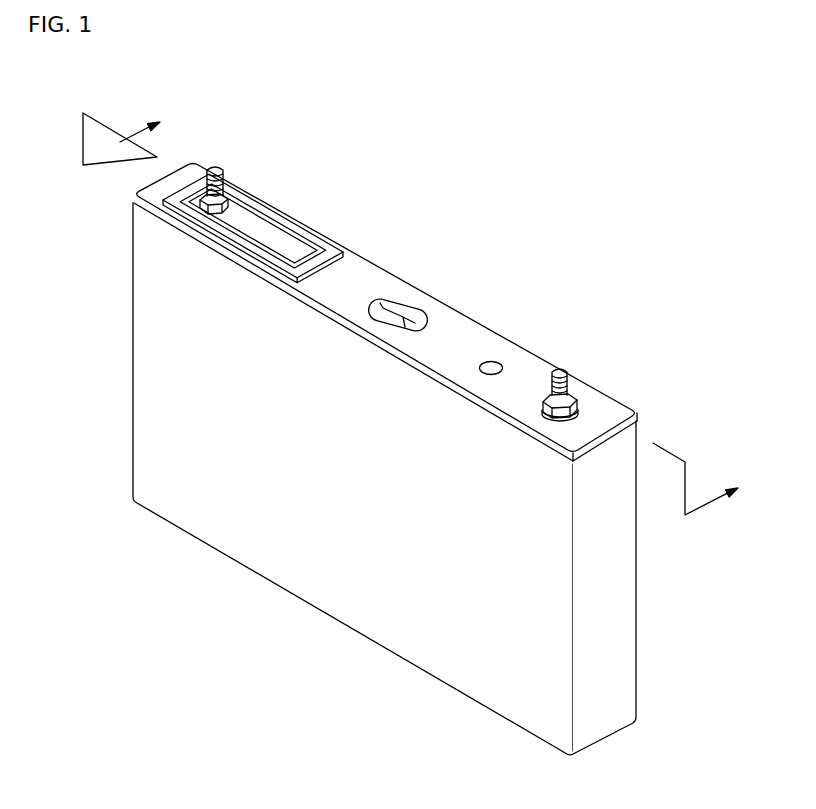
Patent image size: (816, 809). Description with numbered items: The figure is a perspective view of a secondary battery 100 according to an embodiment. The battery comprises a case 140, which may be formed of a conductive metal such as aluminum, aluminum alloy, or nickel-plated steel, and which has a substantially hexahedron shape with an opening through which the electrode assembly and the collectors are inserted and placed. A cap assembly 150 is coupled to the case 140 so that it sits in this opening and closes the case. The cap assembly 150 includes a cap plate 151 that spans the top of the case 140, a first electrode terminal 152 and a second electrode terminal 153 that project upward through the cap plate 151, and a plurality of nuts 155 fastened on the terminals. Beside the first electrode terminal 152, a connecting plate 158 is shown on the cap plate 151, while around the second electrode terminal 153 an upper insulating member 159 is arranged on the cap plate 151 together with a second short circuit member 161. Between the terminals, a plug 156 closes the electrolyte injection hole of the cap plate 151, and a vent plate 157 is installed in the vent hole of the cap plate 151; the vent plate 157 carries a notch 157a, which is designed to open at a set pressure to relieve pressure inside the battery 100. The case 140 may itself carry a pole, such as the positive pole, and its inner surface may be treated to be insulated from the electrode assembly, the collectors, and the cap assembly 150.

The secondary battery 100 is at (433, 144).
The case 140 is at (333, 602).
The cap assembly 150 is at (485, 313).
The cap plate 151 is at (360, 272).
The first electrode terminal 152 is at (560, 368).
The second electrode terminal 153 is at (217, 165).
The nut 155 is at (187, 213).
The plug 156 is at (493, 363).
The vent plate 157 is at (405, 298).
The notch 157a is at (408, 314).
The connecting plate 158 is at (578, 408).
The upper insulating member 159 is at (283, 217).
The second short circuit member 161 is at (245, 217).